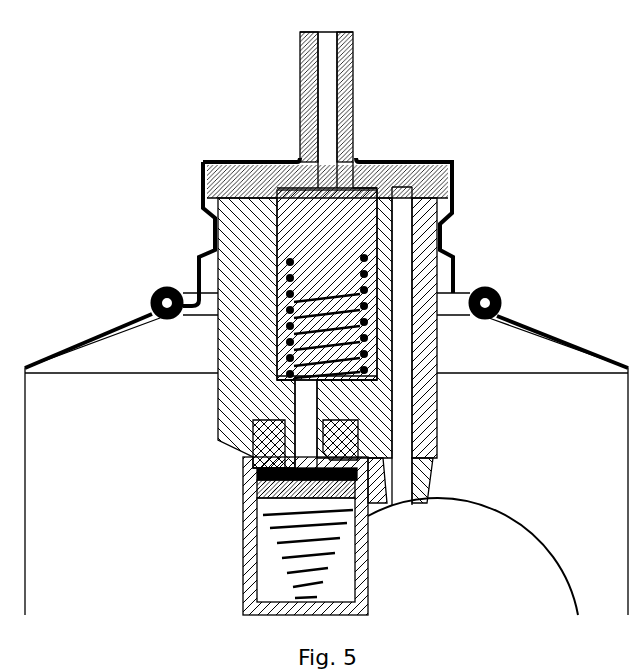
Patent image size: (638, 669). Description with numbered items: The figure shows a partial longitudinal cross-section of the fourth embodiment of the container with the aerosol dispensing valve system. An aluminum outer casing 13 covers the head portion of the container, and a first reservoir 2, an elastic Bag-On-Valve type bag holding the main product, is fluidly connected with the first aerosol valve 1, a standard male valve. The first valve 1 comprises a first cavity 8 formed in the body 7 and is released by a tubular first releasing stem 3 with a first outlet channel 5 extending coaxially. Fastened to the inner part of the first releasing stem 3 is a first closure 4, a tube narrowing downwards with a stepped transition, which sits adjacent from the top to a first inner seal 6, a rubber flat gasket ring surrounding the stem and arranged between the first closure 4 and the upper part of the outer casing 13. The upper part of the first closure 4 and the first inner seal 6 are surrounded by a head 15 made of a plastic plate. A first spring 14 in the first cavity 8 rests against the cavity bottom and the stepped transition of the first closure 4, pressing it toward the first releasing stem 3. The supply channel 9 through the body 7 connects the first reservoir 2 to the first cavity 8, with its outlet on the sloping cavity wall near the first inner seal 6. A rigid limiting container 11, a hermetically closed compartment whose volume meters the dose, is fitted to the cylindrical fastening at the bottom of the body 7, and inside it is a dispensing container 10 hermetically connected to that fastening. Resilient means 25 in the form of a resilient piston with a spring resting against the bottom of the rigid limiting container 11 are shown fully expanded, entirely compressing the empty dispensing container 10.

The first aerosol valve 1 is at (205, 161).
The first reservoir 2 is at (517, 532).
The first releasing stem 3 is at (340, 90).
The first closure 4 is at (313, 222).
The first outlet channel 5 is at (322, 103).
The first inner seal 6 is at (368, 177).
The body 7 is at (215, 213).
The first cavity 8 is at (280, 262).
The supply channel 9 is at (408, 222).
The dispensing container 10 is at (257, 477).
The rigid limiting container 11 is at (245, 593).
The outer casing 13 is at (457, 268).
The first spring 14 is at (278, 342).
The head 15 is at (449, 170).
The resilient means 25 is at (275, 493).